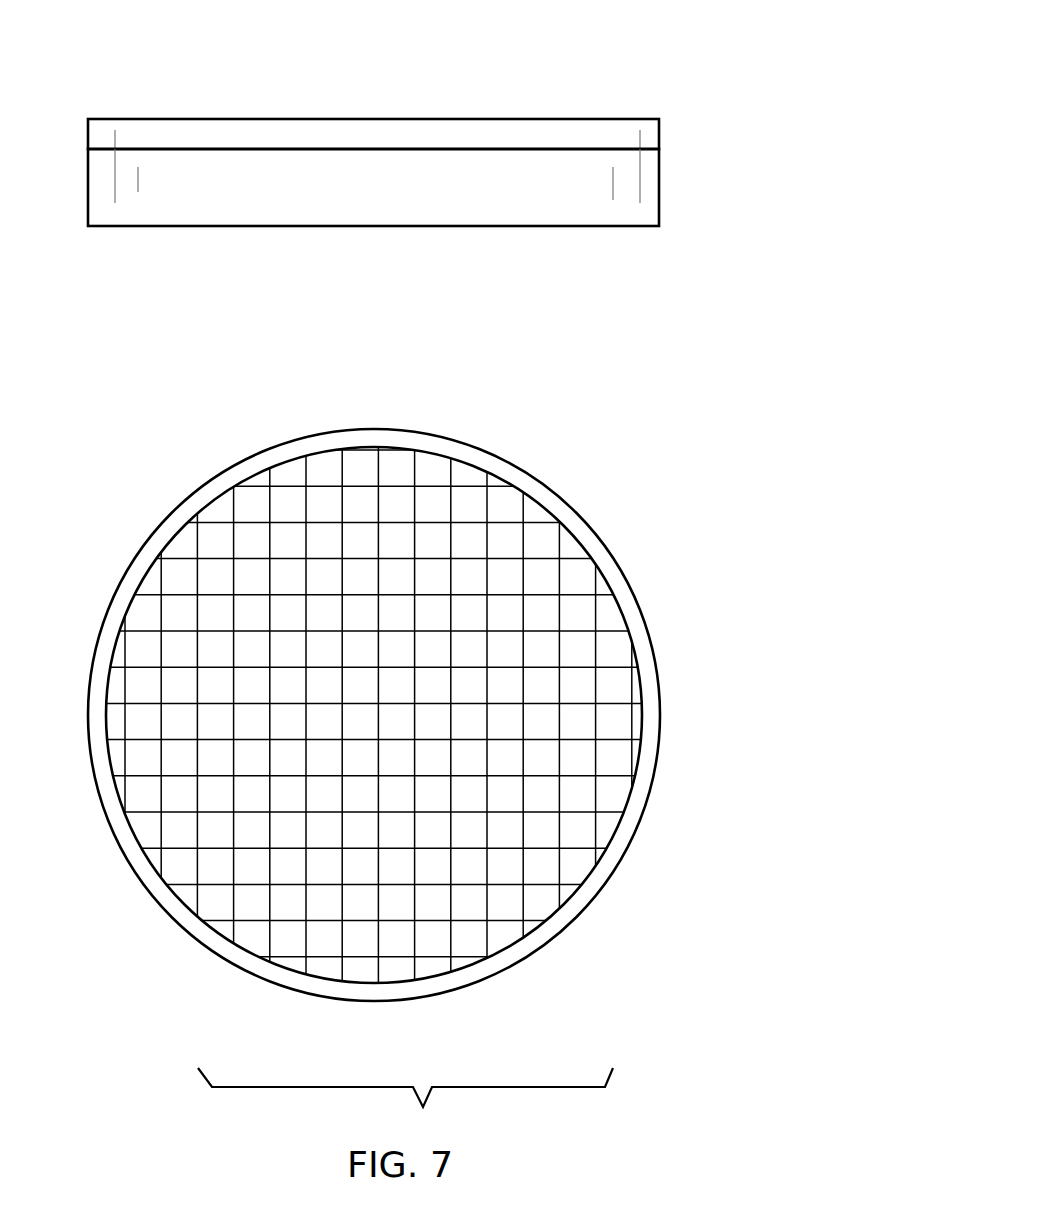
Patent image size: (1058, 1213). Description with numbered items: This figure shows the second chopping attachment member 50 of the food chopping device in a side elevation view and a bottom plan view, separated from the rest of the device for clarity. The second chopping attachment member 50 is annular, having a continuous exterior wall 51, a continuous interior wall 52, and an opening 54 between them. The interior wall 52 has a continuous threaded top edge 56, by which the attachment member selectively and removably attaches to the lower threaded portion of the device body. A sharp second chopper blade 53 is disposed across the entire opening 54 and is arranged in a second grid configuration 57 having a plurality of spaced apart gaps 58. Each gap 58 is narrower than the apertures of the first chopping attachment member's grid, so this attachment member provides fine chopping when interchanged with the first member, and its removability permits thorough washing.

The second chopping attachment member 50 is at (462, 499).
The exterior wall 51 is at (651, 183).
The interior wall 52 is at (627, 803).
The second chopper blade 53 is at (558, 613).
The opening 54 is at (240, 473).
The threaded top edge 56 is at (637, 121).
The second grid configuration 57 is at (535, 898).
The gaps 58 is at (180, 872).